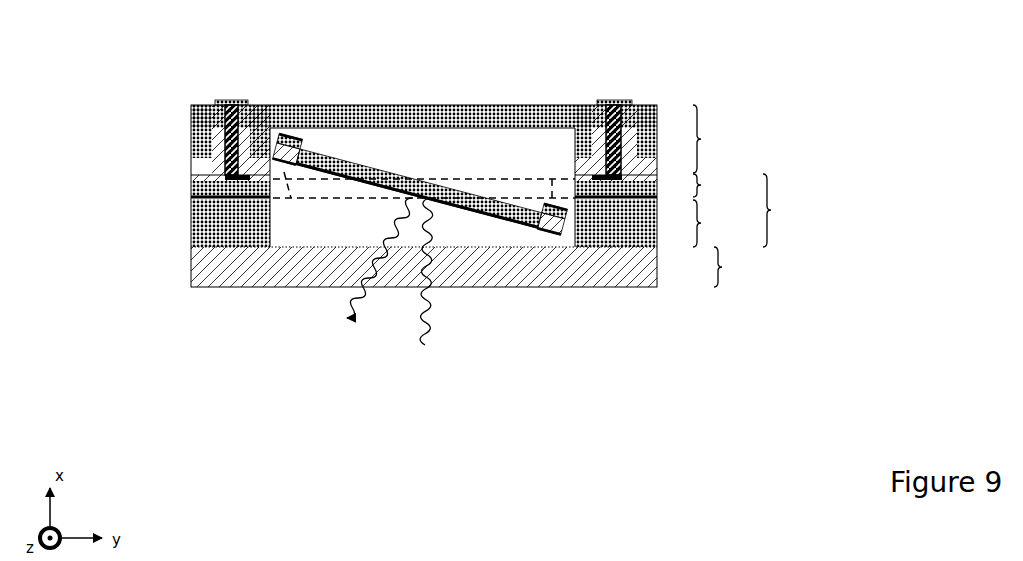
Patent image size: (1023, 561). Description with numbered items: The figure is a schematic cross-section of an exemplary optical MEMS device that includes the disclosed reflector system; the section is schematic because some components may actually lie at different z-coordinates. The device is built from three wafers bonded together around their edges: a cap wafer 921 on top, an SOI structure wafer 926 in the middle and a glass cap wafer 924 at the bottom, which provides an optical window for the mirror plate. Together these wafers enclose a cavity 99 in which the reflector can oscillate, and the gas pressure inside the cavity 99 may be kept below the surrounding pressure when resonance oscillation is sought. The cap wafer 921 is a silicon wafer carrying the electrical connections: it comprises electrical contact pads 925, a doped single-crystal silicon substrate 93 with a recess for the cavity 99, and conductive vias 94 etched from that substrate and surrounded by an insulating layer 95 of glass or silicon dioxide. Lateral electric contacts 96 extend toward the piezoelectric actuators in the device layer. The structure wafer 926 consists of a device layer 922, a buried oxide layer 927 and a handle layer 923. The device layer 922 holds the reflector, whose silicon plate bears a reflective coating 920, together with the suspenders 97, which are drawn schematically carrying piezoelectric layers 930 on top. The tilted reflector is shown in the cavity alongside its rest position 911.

The silicon substrate 93 is at (195, 137).
The conductive vias 94 is at (228, 118).
The insulating layer 95 is at (248, 128).
The lateral electric contacts 96 is at (227, 180).
The suspenders 97 is at (292, 154).
The cavity 99 is at (506, 150).
The mirror rest position 911 is at (277, 196).
The reflective coating 920 is at (502, 222).
The cap wafer 921 is at (725, 139).
The device layer 922 is at (474, 187).
The handle layer 923 is at (474, 223).
The glass cap wafer 924 is at (488, 267).
The electrical contact pads 925 is at (232, 100).
The SOI structure wafer 926 is at (796, 210).
The buried oxide layer 927 is at (217, 201).
The piezoelectric layers 930 is at (296, 138).